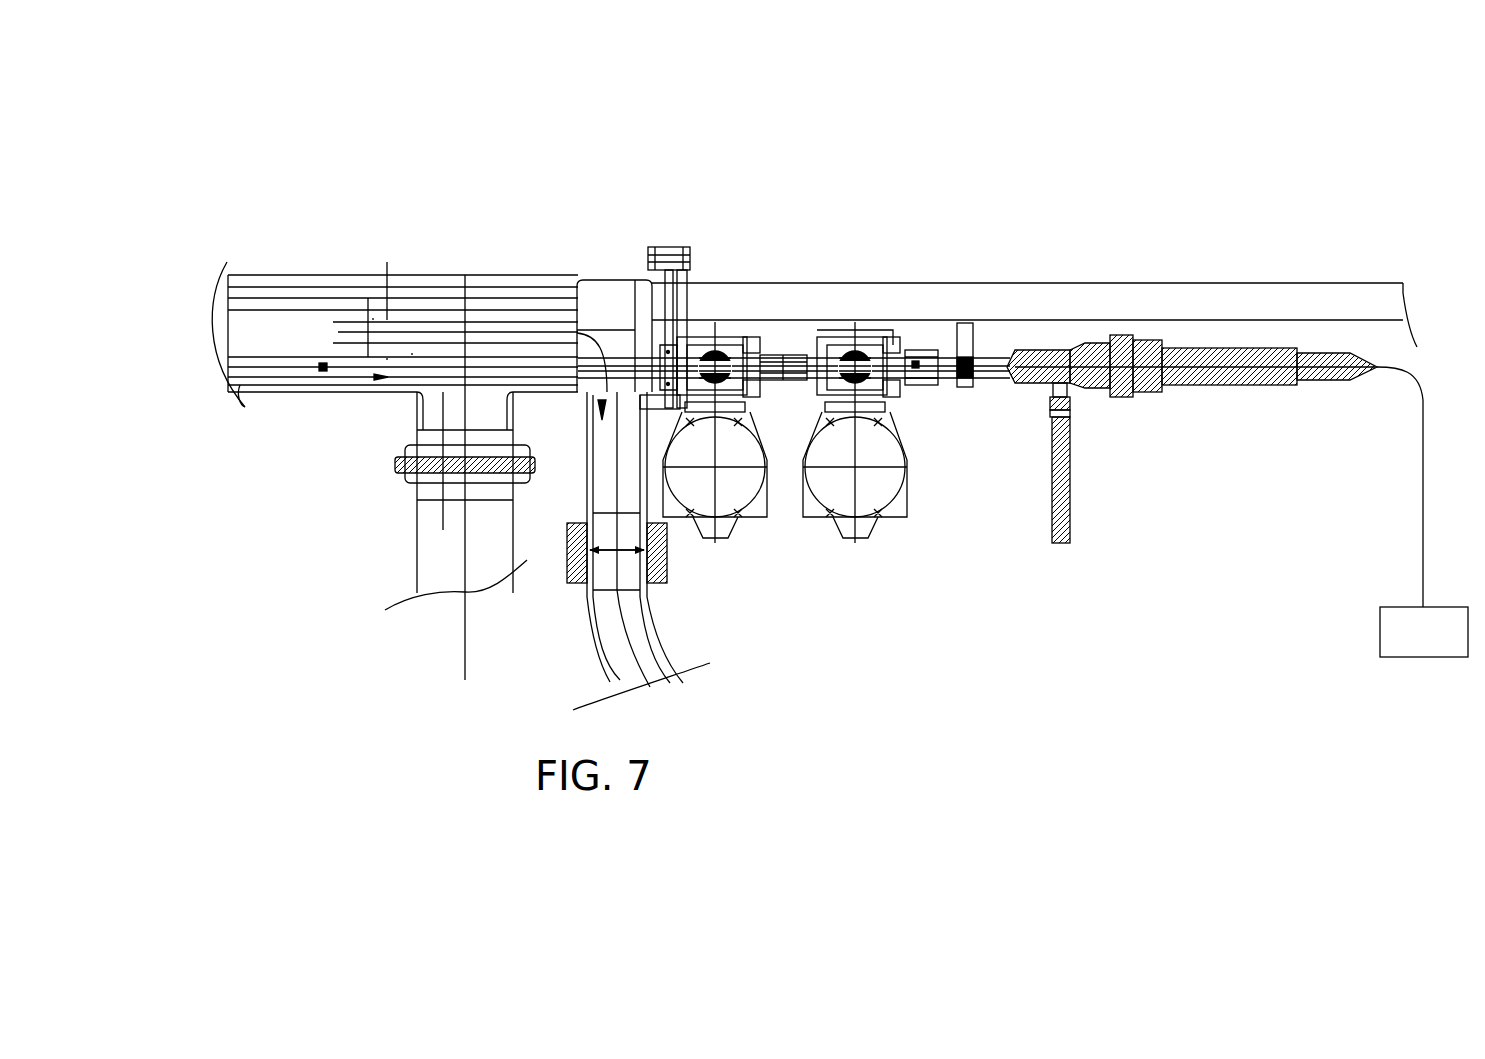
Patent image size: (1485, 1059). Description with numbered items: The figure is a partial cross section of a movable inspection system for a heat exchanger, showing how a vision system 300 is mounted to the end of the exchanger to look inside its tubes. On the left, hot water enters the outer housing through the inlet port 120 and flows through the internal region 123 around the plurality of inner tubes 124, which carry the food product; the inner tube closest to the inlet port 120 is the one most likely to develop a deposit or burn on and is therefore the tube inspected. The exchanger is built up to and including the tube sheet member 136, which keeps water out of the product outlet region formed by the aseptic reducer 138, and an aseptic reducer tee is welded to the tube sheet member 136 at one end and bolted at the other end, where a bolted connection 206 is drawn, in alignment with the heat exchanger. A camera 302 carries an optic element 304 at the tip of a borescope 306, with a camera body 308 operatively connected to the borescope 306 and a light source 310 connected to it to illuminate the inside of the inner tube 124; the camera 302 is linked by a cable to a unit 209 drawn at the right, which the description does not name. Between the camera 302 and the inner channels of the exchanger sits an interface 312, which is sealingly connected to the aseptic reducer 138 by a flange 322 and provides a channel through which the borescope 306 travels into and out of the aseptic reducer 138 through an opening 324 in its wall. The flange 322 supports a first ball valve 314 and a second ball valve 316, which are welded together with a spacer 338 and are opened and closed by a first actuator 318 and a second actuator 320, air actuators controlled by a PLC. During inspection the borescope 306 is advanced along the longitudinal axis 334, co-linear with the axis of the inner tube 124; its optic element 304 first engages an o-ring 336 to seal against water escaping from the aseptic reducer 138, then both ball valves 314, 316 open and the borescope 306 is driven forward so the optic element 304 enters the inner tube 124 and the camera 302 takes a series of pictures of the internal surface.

The inlet port 120 is at (477, 543).
The internal region 123 is at (373, 318).
The inner tubes 124 is at (278, 293).
The tube sheet member 136 is at (578, 278).
The aseptic reducer 138 is at (590, 320).
The flange 206 is at (644, 290).
The controller 209 is at (1343, 362).
The vision system 300 is at (1045, 213).
The camera 302 is at (1233, 437).
The optic element 304 is at (320, 370).
The borescope 306 is at (990, 373).
The camera body 308 is at (1033, 350).
The light source 310 is at (1072, 455).
The interface 312 is at (793, 573).
The first ball valve 314 is at (733, 335).
The second ball valve 316 is at (880, 335).
The first actuator 318 is at (748, 523).
The second actuator 320 is at (887, 520).
The flange 322 is at (675, 268).
The opening 324 is at (660, 352).
The longitudinal axis 334 is at (240, 385).
The o-ring 336 is at (920, 387).
The spacer 338 is at (800, 340).